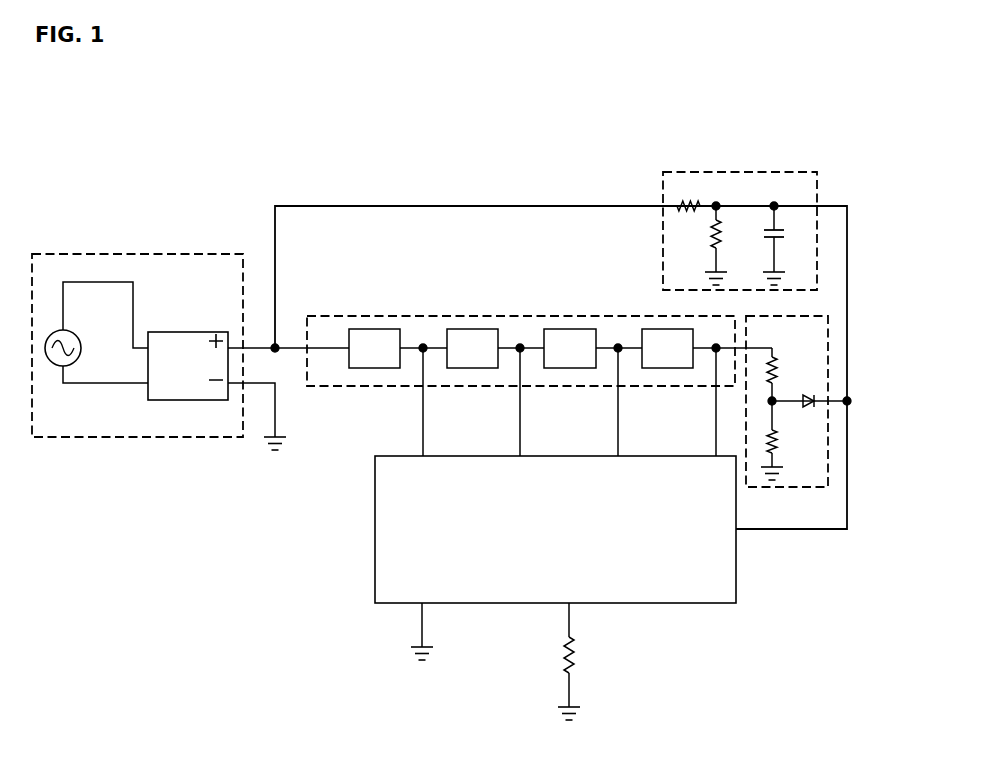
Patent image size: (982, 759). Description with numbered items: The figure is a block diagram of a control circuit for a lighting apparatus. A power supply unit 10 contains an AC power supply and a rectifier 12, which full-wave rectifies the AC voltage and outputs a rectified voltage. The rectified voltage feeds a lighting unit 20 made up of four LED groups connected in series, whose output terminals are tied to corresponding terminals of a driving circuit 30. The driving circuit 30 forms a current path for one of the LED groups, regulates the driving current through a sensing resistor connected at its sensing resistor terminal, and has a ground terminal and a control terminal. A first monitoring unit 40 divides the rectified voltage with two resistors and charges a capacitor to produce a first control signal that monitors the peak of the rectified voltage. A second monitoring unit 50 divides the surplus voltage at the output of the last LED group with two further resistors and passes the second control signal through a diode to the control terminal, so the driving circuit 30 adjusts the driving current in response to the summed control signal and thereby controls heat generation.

The power supply unit 10 is at (120, 437).
The rectifier 12 is at (168, 331).
The lighting unit 20 is at (368, 316).
The driving circuit 30 is at (505, 603).
The first monitoring unit 40 is at (725, 172).
The second monitoring unit 50 is at (797, 487).